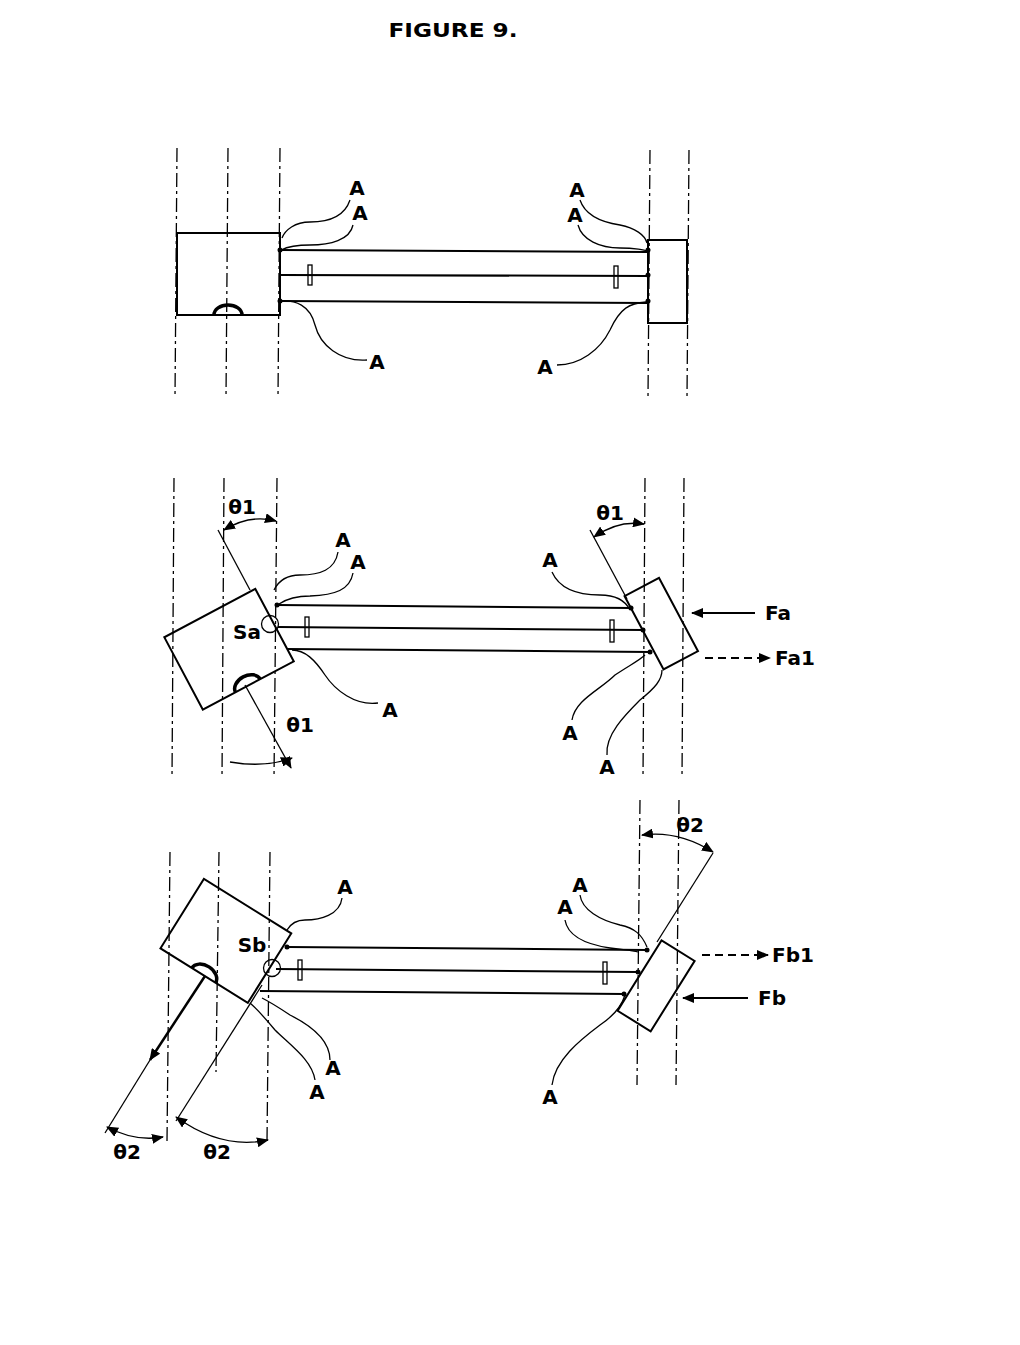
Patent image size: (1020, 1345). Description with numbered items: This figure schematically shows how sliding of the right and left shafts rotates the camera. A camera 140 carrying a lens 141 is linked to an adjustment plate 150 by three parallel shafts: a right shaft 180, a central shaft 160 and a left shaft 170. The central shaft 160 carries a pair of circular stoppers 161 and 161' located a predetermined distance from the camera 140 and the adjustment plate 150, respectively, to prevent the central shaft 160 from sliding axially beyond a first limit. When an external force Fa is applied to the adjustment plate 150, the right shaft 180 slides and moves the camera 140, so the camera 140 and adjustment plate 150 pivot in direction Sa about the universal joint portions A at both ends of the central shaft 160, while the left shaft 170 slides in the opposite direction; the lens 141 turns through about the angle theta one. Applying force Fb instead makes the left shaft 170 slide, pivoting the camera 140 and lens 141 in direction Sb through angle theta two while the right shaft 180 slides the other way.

The camera 140 is at (193, 267).
The lens 141 is at (227, 317).
The adjustment plate 150 is at (670, 283).
The central shaft 160 is at (435, 277).
The circular stopper 161 is at (364, 655).
The circular stopper 161' is at (546, 658).
The left shaft 170 is at (465, 302).
The right shaft 180 is at (400, 250).